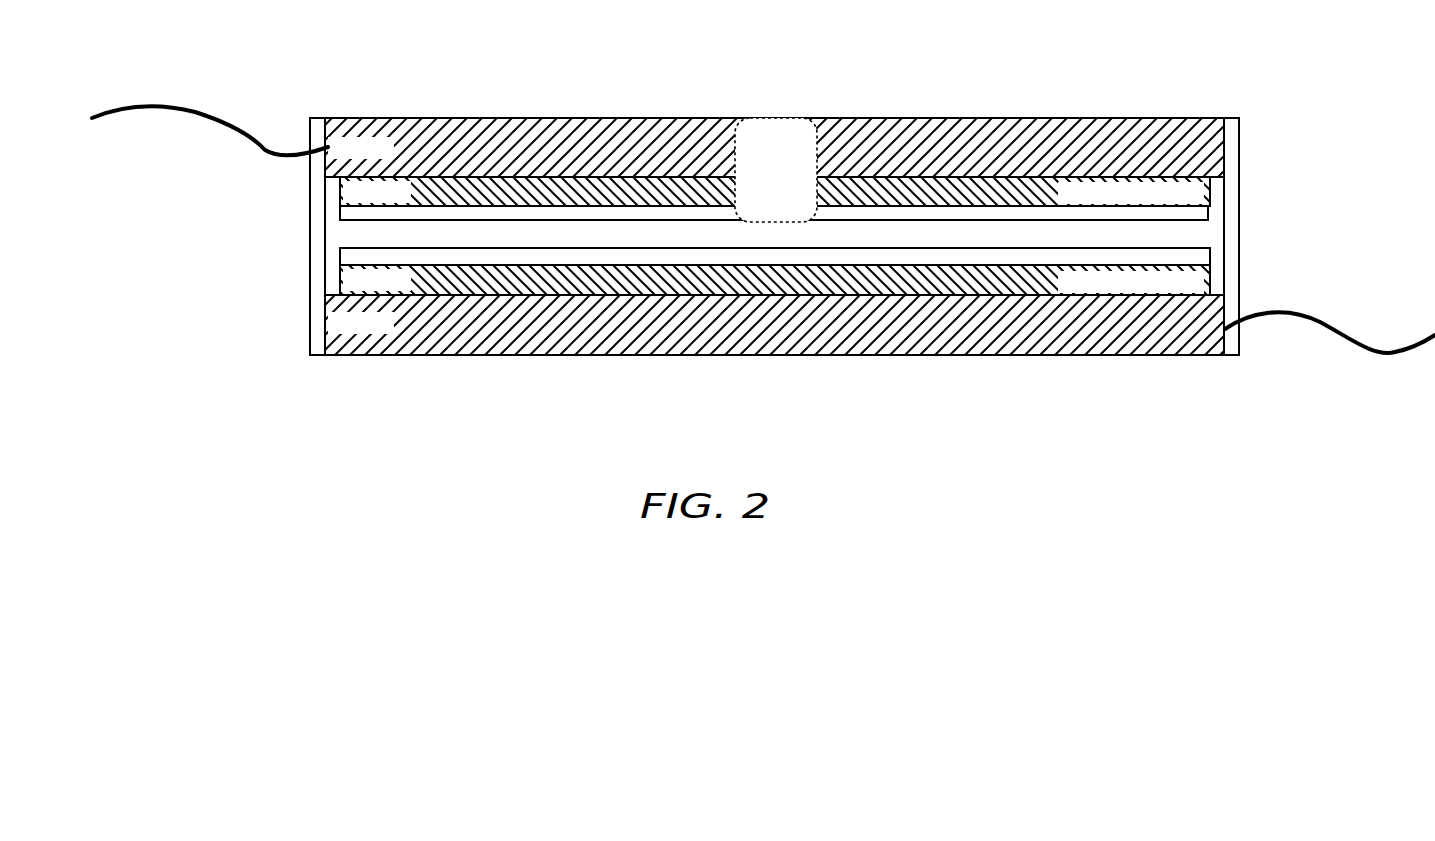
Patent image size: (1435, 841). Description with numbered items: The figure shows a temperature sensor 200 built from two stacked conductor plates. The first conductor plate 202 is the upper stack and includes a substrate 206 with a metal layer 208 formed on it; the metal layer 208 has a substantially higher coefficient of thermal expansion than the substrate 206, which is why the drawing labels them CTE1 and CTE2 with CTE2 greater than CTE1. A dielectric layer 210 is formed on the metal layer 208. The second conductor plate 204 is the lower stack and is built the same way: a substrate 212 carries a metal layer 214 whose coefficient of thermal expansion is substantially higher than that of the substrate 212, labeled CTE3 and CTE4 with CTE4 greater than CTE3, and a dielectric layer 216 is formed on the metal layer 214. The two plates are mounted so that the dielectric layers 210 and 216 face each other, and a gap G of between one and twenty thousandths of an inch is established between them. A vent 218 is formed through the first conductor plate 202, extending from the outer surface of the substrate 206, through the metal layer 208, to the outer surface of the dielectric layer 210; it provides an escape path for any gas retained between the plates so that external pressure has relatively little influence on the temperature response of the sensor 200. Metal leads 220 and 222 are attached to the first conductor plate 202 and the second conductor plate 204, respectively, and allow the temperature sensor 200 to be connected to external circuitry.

The temperature sensor 200 is at (263, 432).
The first conductor plate 202 is at (1012, 110).
The second conductor plate 204 is at (1045, 366).
The substrate 206 is at (1210, 154).
The metal layer 208 is at (1205, 193).
The dielectric layer 210 is at (1205, 217).
The substrate 212 is at (330, 312).
The metal layer 214 is at (340, 280).
The dielectric layer 216 is at (340, 258).
The vent 218 is at (766, 138).
The metal lead 220 is at (192, 118).
The metal lead 222 is at (1365, 347).
The gap G is at (1147, 240).